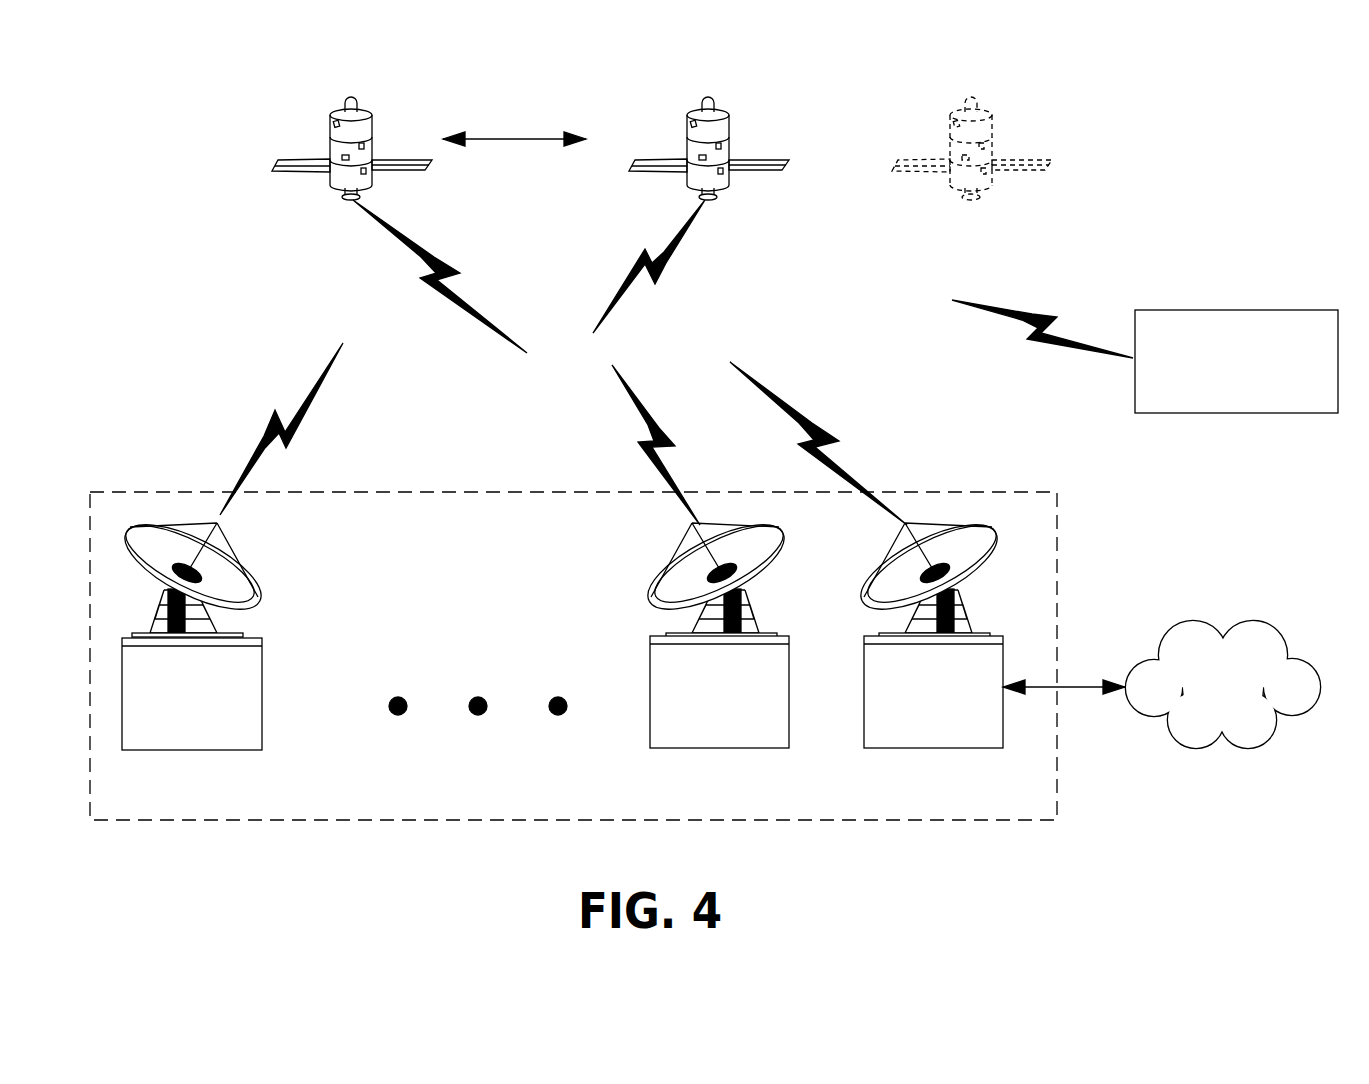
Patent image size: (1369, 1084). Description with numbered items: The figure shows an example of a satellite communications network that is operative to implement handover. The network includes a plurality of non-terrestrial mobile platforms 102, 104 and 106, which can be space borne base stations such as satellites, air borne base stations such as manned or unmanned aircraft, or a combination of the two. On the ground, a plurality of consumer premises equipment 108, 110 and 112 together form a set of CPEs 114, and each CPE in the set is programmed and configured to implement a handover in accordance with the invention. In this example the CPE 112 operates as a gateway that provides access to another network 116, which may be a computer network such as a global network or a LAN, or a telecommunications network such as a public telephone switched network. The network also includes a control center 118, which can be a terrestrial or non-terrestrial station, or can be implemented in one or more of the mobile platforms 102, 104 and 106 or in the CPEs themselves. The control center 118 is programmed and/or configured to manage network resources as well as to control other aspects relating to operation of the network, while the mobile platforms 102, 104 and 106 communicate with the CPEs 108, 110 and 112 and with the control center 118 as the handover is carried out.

The non-terrestrial mobile platform 102 is at (373, 118).
The non-terrestrial mobile platform 104 is at (729, 118).
The non-terrestrial mobile platform 106 is at (992, 112).
The consumer premises equipment 108 is at (183, 752).
The consumer premises equipment 110 is at (713, 750).
The consumer premises equipment 112 is at (935, 750).
The set of CPEs 114 is at (1057, 515).
The another network 116 is at (1197, 748).
The control center 118 is at (1238, 310).